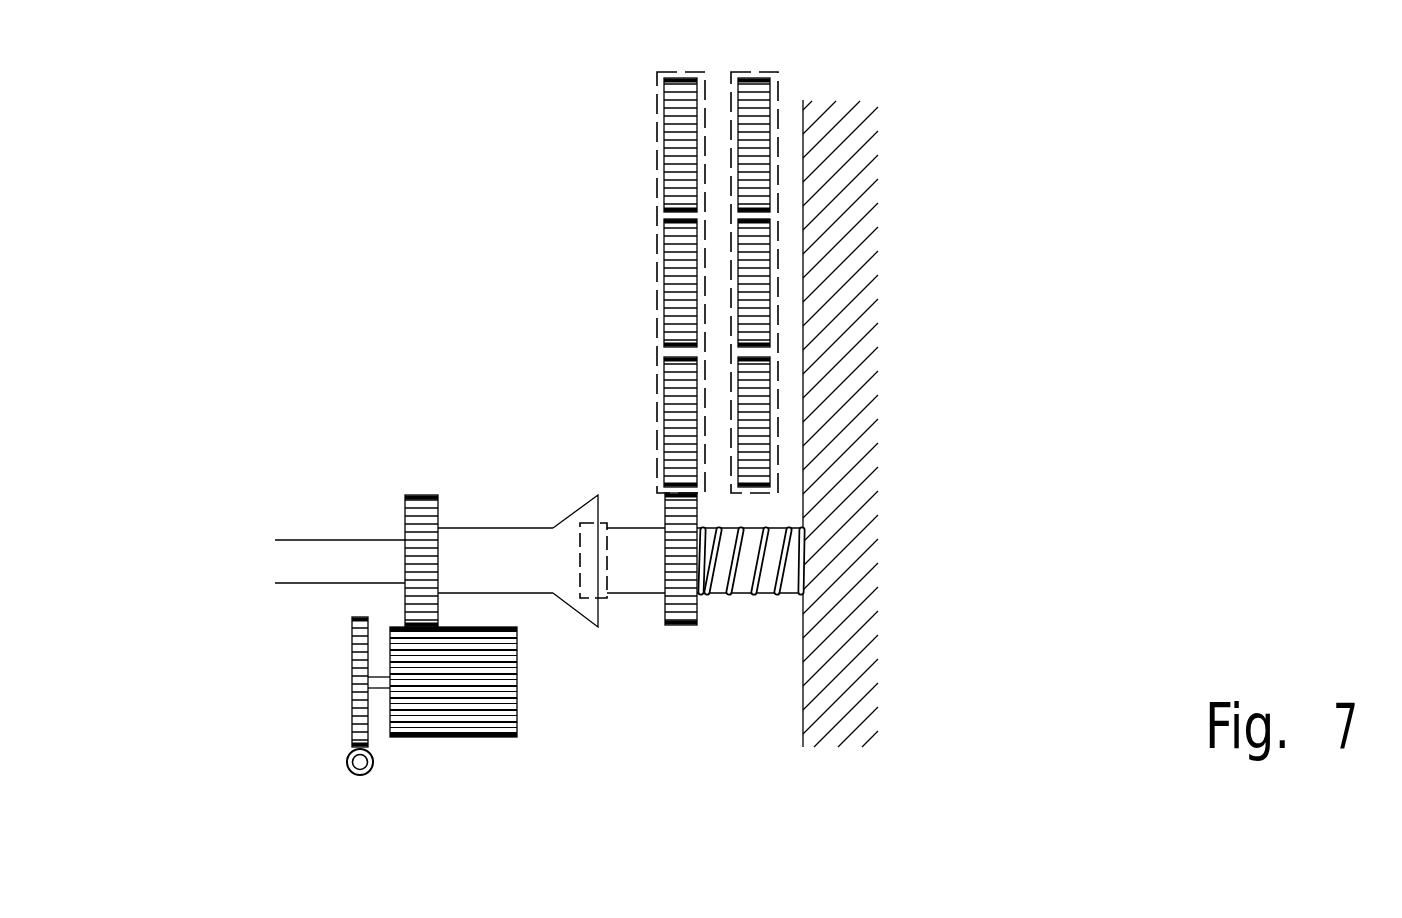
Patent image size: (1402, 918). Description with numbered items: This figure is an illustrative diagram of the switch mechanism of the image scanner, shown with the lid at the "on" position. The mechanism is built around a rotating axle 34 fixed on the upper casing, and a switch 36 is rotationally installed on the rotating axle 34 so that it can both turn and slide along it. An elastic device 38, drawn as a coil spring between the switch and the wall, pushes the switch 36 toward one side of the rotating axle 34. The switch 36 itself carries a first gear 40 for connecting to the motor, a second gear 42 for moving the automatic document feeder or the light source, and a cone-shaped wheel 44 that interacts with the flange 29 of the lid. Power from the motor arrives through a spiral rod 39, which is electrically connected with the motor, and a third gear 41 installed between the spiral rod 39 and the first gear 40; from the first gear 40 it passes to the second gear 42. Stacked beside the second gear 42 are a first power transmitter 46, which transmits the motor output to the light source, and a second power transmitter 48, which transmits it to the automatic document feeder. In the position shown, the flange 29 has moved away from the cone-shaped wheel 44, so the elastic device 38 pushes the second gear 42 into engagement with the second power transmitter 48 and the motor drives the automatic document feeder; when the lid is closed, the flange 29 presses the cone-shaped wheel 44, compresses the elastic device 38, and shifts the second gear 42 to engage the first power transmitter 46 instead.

The flange 29 is at (593, 575).
The rotating axle 34 is at (300, 560).
The switch 36 is at (482, 443).
The elastic device 38 is at (762, 577).
The spiral rod 39 is at (347, 765).
The first gear 40 is at (415, 548).
The third gear 41 is at (475, 705).
The second gear 42 is at (677, 602).
The cone-shaped wheel 44 is at (553, 547).
The first power transmitter 46 is at (752, 105).
The second power transmitter 48 is at (680, 147).